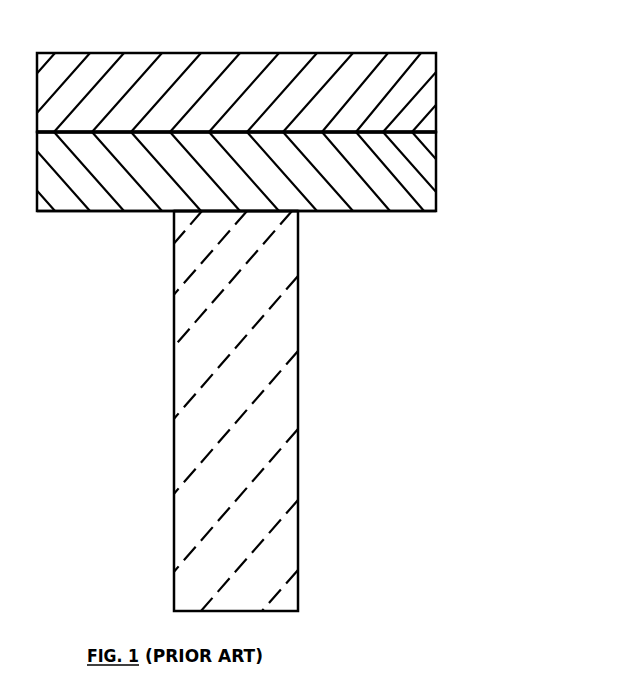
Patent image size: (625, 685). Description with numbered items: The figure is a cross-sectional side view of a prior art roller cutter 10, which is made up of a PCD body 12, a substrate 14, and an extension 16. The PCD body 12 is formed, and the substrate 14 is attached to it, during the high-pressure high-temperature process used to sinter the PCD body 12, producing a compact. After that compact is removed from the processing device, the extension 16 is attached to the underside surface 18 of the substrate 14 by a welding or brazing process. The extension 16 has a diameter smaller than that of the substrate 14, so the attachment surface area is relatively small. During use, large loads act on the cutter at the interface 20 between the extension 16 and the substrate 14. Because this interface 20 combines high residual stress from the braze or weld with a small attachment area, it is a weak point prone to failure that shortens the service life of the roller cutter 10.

The roller cutter 10 is at (245, 305).
The PCD body 12 is at (282, 69).
The substrate 14 is at (428, 143).
The extension 16 is at (288, 398).
The underside surface 18 is at (319, 212).
The interface 20 is at (212, 212).